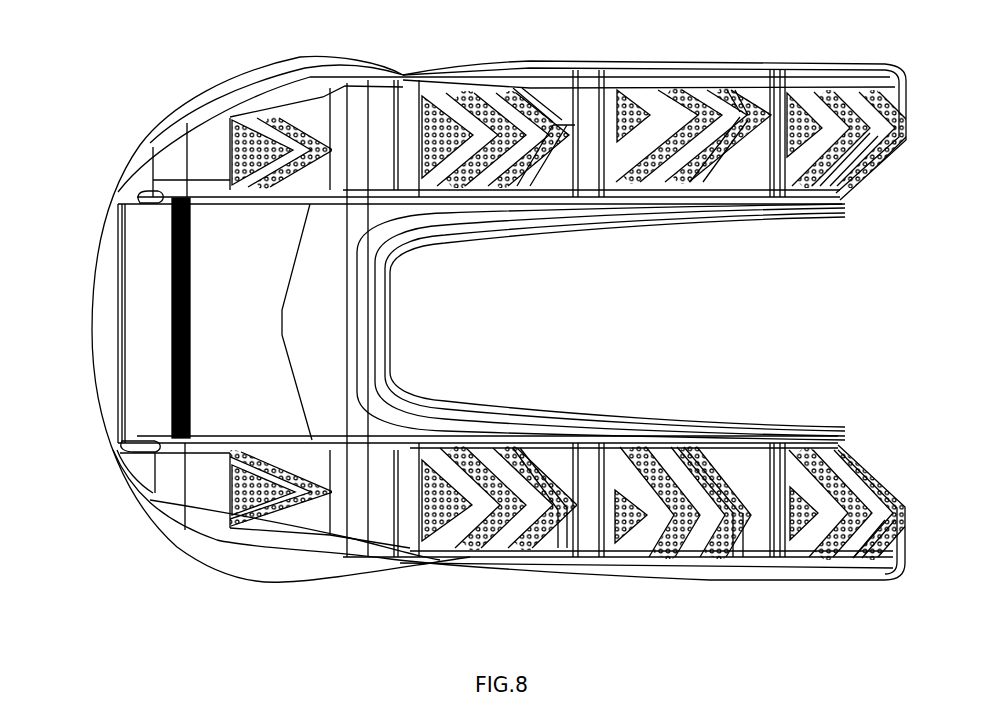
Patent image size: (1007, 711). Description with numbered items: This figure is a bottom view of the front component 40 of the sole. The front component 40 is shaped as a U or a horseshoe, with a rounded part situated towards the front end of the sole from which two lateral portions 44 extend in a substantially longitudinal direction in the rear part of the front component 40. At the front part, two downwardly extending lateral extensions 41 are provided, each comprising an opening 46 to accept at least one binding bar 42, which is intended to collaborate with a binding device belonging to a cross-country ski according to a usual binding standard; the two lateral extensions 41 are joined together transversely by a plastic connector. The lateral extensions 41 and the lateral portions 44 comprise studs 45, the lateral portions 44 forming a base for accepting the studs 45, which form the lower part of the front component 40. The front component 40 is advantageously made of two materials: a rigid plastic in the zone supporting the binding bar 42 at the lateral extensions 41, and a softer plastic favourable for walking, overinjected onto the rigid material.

The front component 40 is at (205, 570).
The lateral extension 41 is at (235, 103).
The binding bar 42 is at (170, 337).
The lateral portion 44 is at (565, 418).
The stud 45 is at (812, 195).
The opening 46 is at (137, 197).